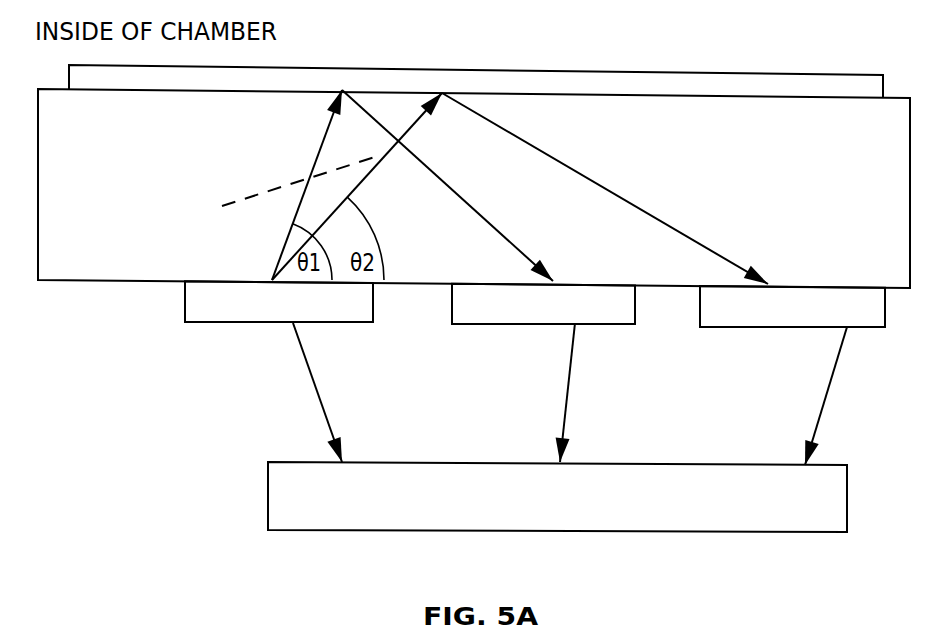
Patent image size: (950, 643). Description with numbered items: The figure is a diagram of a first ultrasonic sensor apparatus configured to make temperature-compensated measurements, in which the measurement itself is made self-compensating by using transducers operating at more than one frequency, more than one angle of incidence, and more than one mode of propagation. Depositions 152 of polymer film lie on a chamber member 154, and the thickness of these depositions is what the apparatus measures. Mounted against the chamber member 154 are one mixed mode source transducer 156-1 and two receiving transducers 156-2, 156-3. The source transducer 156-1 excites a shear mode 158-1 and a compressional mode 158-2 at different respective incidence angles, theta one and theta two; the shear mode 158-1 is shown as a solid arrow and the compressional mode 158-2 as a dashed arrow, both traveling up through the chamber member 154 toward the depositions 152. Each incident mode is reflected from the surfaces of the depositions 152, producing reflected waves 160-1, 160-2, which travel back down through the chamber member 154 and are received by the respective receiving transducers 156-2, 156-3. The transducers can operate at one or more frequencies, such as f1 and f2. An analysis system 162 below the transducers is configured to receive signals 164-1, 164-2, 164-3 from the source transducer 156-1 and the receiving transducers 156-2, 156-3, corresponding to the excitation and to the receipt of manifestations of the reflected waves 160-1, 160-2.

The depositions 152 is at (858, 73).
The chamber member 154 is at (83, 124).
The mixed mode source transducer 156-1 is at (290, 315).
The receiving transducer 156-2 is at (560, 315).
The receiving transducer 156-3 is at (808, 321).
The shear mode 158-1 is at (268, 185).
The compressional mode 158-2 is at (273, 186).
The reflected wave 160-1 is at (447, 185).
The reflected wave 160-2 is at (605, 188).
The analysis system 162 is at (660, 510).
The signal 164-1 is at (301, 392).
The signal 164-2 is at (534, 392).
The signal 164-3 is at (795, 396).